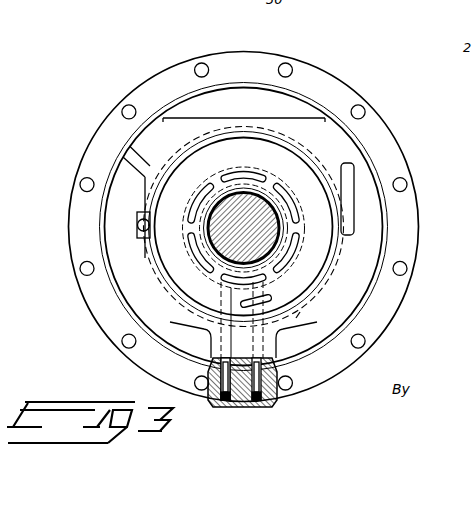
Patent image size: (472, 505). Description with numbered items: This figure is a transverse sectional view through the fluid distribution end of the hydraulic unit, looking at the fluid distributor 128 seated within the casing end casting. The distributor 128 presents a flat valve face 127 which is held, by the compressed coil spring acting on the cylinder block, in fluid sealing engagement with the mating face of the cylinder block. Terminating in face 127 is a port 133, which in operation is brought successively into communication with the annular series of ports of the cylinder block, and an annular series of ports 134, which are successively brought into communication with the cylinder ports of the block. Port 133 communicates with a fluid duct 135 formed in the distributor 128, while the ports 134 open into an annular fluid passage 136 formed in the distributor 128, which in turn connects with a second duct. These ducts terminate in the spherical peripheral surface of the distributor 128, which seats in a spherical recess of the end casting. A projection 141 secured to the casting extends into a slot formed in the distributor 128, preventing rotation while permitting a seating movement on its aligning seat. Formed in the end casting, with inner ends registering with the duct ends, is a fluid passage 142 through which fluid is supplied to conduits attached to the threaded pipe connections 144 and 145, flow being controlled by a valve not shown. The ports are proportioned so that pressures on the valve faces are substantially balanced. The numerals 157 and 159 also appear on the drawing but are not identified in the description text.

The face 127 is at (322, 221).
The fluid distributor 128 is at (296, 166).
The port 133 is at (298, 316).
The annular series of ports 134 is at (242, 173).
The fluid duct 135 is at (270, 299).
The annular fluid passage 136 is at (185, 243).
The projection 141 is at (137, 226).
The fluid passage 142 is at (270, 344).
The threaded pipe connection 144 is at (258, 408).
The threaded pipe connection 145 is at (220, 345).
The ring 157 is at (205, 314).
The flange 159 is at (391, 144).